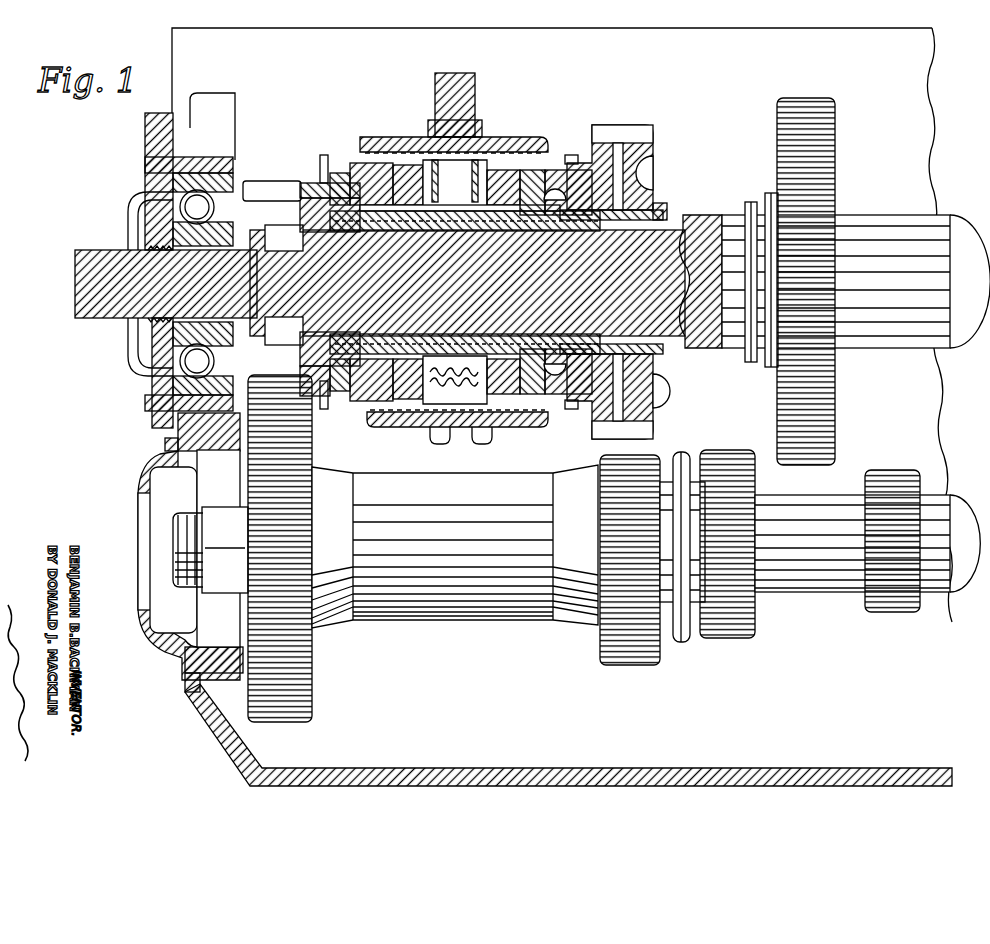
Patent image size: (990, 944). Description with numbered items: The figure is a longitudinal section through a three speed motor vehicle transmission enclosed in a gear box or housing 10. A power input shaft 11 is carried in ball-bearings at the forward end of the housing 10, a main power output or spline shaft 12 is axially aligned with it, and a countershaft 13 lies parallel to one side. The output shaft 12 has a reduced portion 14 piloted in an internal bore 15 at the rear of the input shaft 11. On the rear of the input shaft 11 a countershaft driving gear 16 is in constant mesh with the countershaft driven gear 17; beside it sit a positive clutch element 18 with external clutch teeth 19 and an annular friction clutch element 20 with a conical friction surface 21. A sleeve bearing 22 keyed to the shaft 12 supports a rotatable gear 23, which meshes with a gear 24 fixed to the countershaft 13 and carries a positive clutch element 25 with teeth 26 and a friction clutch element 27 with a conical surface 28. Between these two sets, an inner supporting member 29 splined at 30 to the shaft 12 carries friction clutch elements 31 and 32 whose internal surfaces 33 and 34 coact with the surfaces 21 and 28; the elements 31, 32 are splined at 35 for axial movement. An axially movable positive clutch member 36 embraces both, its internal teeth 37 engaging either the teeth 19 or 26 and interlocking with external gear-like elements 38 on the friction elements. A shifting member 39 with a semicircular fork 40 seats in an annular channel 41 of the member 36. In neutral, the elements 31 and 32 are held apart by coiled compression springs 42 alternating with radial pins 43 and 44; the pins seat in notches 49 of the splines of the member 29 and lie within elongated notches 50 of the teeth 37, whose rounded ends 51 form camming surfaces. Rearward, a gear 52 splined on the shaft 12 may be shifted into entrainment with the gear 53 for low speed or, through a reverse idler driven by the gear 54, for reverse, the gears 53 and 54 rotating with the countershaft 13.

The housing 10 is at (215, 725).
The power input shaft 11 is at (82, 281).
The power output shaft 12 is at (690, 240).
The countershaft 13 is at (456, 565).
The reduced portion 14 is at (240, 262).
The internal bearing or bore 15 is at (262, 235).
The countershaft driving gear 16 is at (270, 190).
The countershaft driven gear 17 is at (278, 690).
The positive clutch element 18 is at (312, 183).
The clutch teeth 19 is at (324, 158).
The annular friction clutch element 20 is at (350, 388).
The external conical friction clutch surface 21 is at (342, 172).
The sleeve bearing 22 is at (660, 203).
The rotatable gear 23 is at (650, 377).
The gear 24 is at (622, 655).
The positive clutch element 25 is at (588, 192).
The clutch teeth 26 is at (577, 168).
The annular friction clutch element 27 is at (565, 408).
The external conical friction clutch surface 28 is at (568, 155).
The inner supporting member 29 is at (490, 208).
The spline 30 is at (502, 232).
The friction clutch element 31 is at (408, 388).
The friction clutch element 32 is at (507, 388).
The internal friction clutch surface 33 is at (380, 422).
The internal friction clutch surface 34 is at (547, 392).
The spline 35 is at (410, 212).
The positive clutch member 36 is at (488, 188).
The internal clutch teeth 37 is at (392, 165).
The gear-like elements 38 is at (360, 165).
The shifting member 39 is at (455, 78).
The semicircular fork 40 is at (378, 215).
The annular channel 41 is at (480, 440).
The coiled compression springs 42 is at (460, 392).
The pin 43 is at (408, 212).
The pin 44 is at (516, 215).
The notch or recess 49 is at (450, 212).
The elongated notch or recess 50 is at (455, 95).
The rounded ends 51 is at (425, 165).
The gear 52 is at (806, 125).
The gear 53 is at (737, 630).
The gear 54 is at (885, 605).